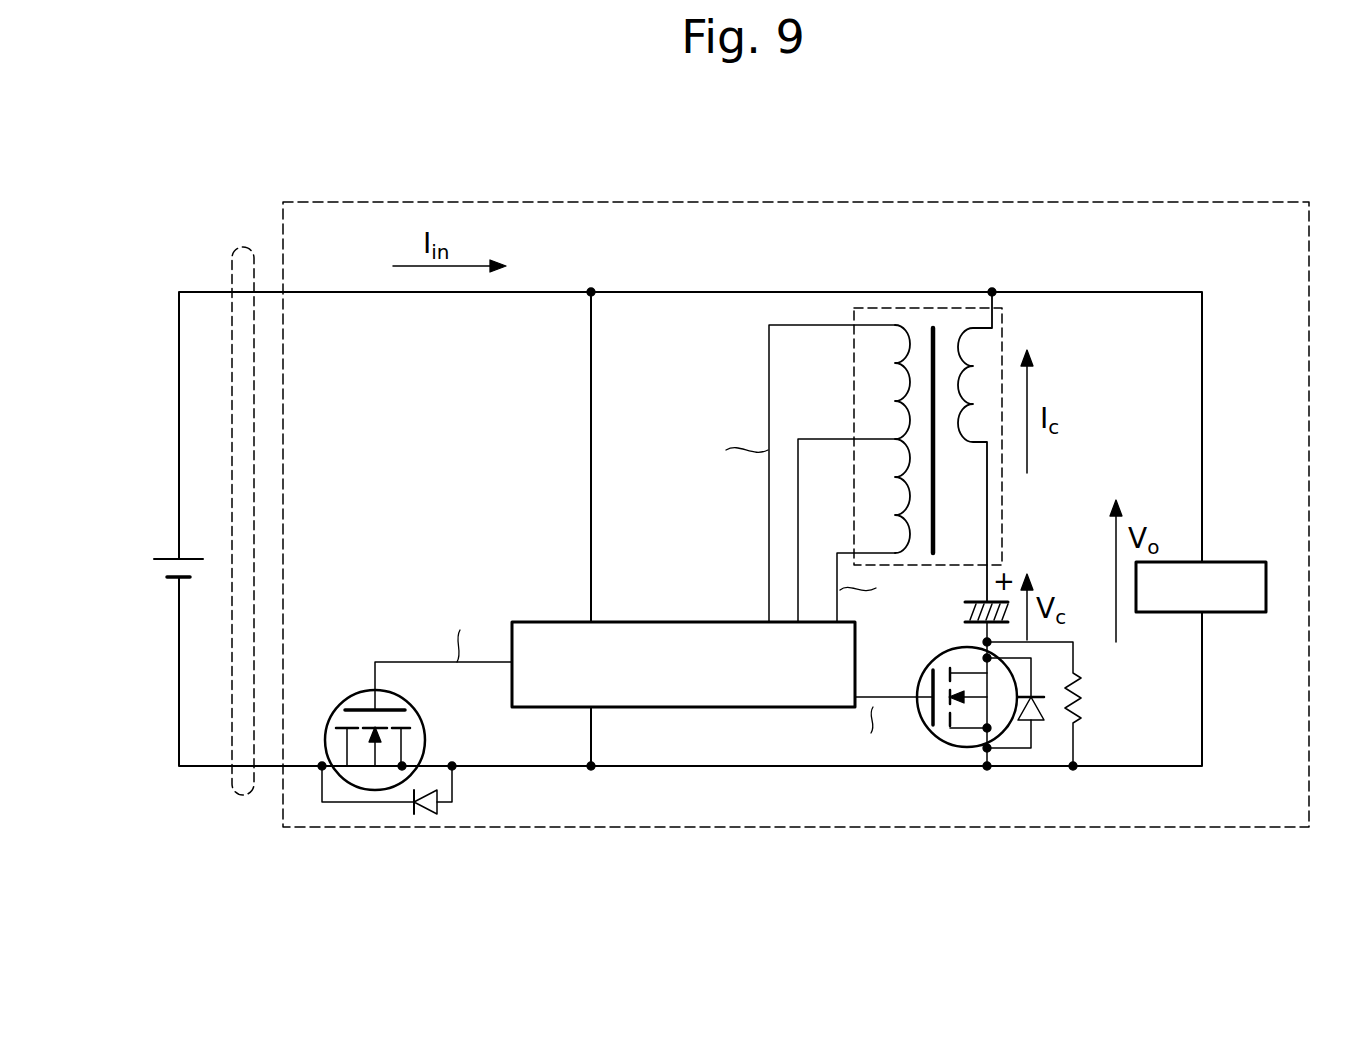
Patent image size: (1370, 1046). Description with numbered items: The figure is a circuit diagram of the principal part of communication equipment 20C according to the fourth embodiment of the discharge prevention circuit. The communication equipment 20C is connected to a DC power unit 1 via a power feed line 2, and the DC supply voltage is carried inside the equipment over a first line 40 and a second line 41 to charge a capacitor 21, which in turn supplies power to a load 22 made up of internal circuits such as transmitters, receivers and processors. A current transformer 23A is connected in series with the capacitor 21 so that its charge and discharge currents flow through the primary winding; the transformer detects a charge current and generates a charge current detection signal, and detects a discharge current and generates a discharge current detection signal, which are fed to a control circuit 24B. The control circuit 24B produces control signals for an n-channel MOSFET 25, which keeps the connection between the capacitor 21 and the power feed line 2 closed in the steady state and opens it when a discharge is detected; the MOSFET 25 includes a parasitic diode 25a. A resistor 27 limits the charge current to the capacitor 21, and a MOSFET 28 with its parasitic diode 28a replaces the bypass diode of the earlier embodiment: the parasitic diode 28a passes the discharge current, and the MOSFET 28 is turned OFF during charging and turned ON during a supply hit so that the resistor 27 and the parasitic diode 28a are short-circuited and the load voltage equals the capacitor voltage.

The DC power unit 1 is at (165, 556).
The power feed line 2 is at (243, 246).
The communication equipment 20C is at (765, 201).
The capacitor 21 is at (965, 612).
The load 22 is at (1248, 561).
The current transformer 23A is at (913, 306).
The control circuit 24B is at (680, 621).
The MOSFET 25 is at (425, 725).
The parasitic diode 25a is at (425, 818).
The resistor 27 is at (1085, 700).
The MOSFET 28 is at (930, 742).
The parasitic diode 28a is at (1040, 724).
The first line 40 is at (730, 291).
The second line 41 is at (707, 769).